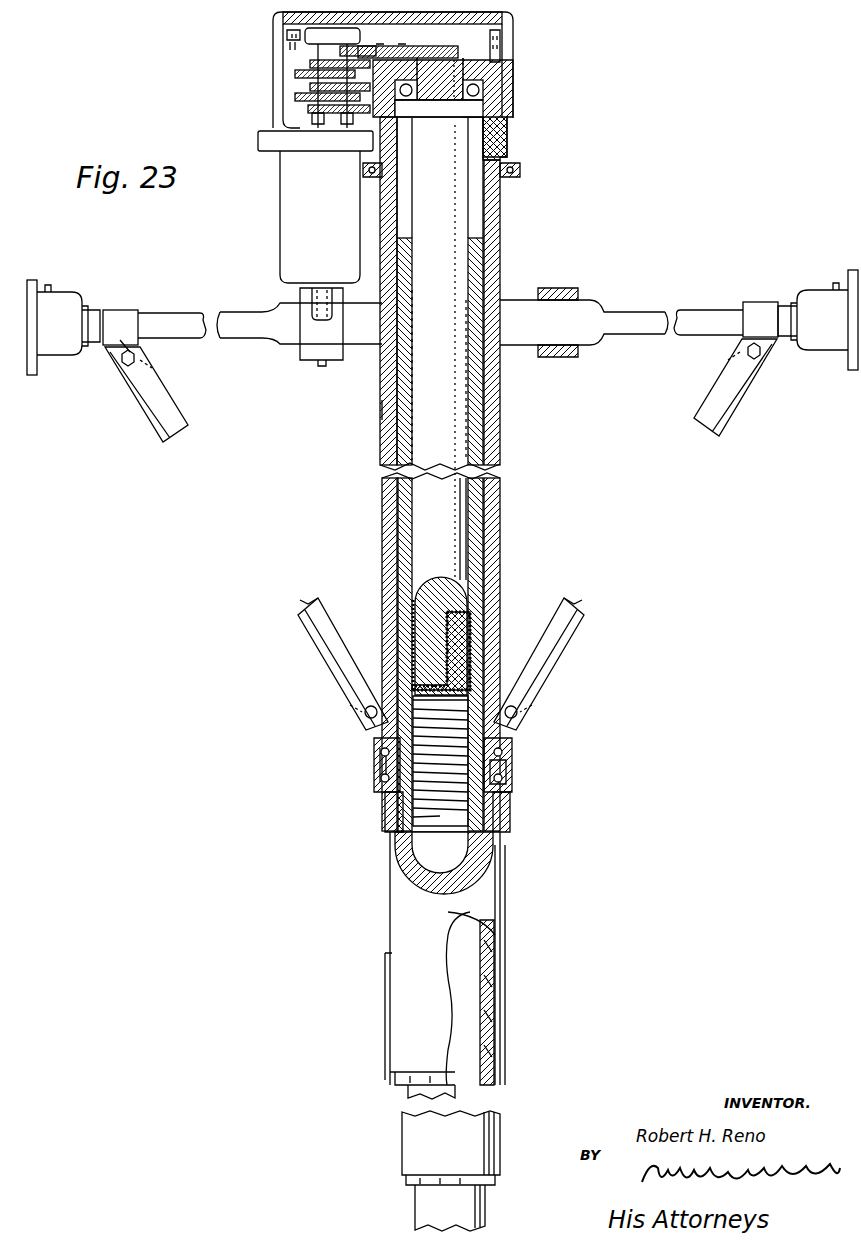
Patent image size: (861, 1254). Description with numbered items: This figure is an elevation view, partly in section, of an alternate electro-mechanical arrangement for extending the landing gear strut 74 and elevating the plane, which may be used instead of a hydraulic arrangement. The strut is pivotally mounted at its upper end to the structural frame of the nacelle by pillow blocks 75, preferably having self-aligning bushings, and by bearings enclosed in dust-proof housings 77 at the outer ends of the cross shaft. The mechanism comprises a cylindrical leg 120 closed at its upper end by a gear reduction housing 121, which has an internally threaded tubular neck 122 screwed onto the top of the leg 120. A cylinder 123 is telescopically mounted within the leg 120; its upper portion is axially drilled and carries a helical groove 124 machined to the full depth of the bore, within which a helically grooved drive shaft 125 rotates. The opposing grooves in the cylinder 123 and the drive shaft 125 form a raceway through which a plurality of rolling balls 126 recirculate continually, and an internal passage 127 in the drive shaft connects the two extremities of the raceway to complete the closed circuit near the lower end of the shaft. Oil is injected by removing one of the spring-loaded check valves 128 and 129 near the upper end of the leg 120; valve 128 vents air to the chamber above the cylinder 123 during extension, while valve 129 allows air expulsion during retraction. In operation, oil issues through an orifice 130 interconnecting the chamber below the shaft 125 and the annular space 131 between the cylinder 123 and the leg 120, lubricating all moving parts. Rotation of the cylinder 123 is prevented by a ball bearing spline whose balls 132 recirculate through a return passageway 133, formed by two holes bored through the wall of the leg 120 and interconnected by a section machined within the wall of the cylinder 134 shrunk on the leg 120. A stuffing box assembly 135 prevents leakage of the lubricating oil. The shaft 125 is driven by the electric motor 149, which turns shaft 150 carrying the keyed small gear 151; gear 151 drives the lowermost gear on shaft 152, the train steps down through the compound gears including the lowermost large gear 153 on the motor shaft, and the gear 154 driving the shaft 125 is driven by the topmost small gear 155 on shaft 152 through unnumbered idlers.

The strut 74 is at (368, 459).
The pillow blocks 75 is at (312, 358).
The dust-proof housings 77 is at (66, 308).
The cylindrical leg 120 is at (500, 540).
The gear reduction housing 121 is at (513, 82).
The internally threaded tubular neck 122 is at (507, 135).
The cylinder 123 is at (476, 502).
The helical groove 124 is at (475, 448).
The drive shaft 125 is at (470, 520).
The rolling balls 126 is at (470, 625).
The internal passage 127 is at (470, 662).
The spring-loaded check valve 128 is at (368, 178).
The spring-loaded check valve 129 is at (521, 171).
The orifice 130 is at (480, 816).
The annular space 131 is at (486, 588).
The balls 132 is at (514, 757).
The return passageway 133 is at (374, 772).
The cylinder 134 is at (514, 776).
The stuffing box assembly 135 is at (500, 1040).
The electric motor 149 is at (281, 238).
The shaft 150 is at (316, 126).
The small gear 151 is at (310, 110).
The shaft 152 is at (348, 126).
The lowermost large gear 153 is at (310, 87).
The gear 154 is at (430, 47).
The topmost small gear 155 is at (340, 52).